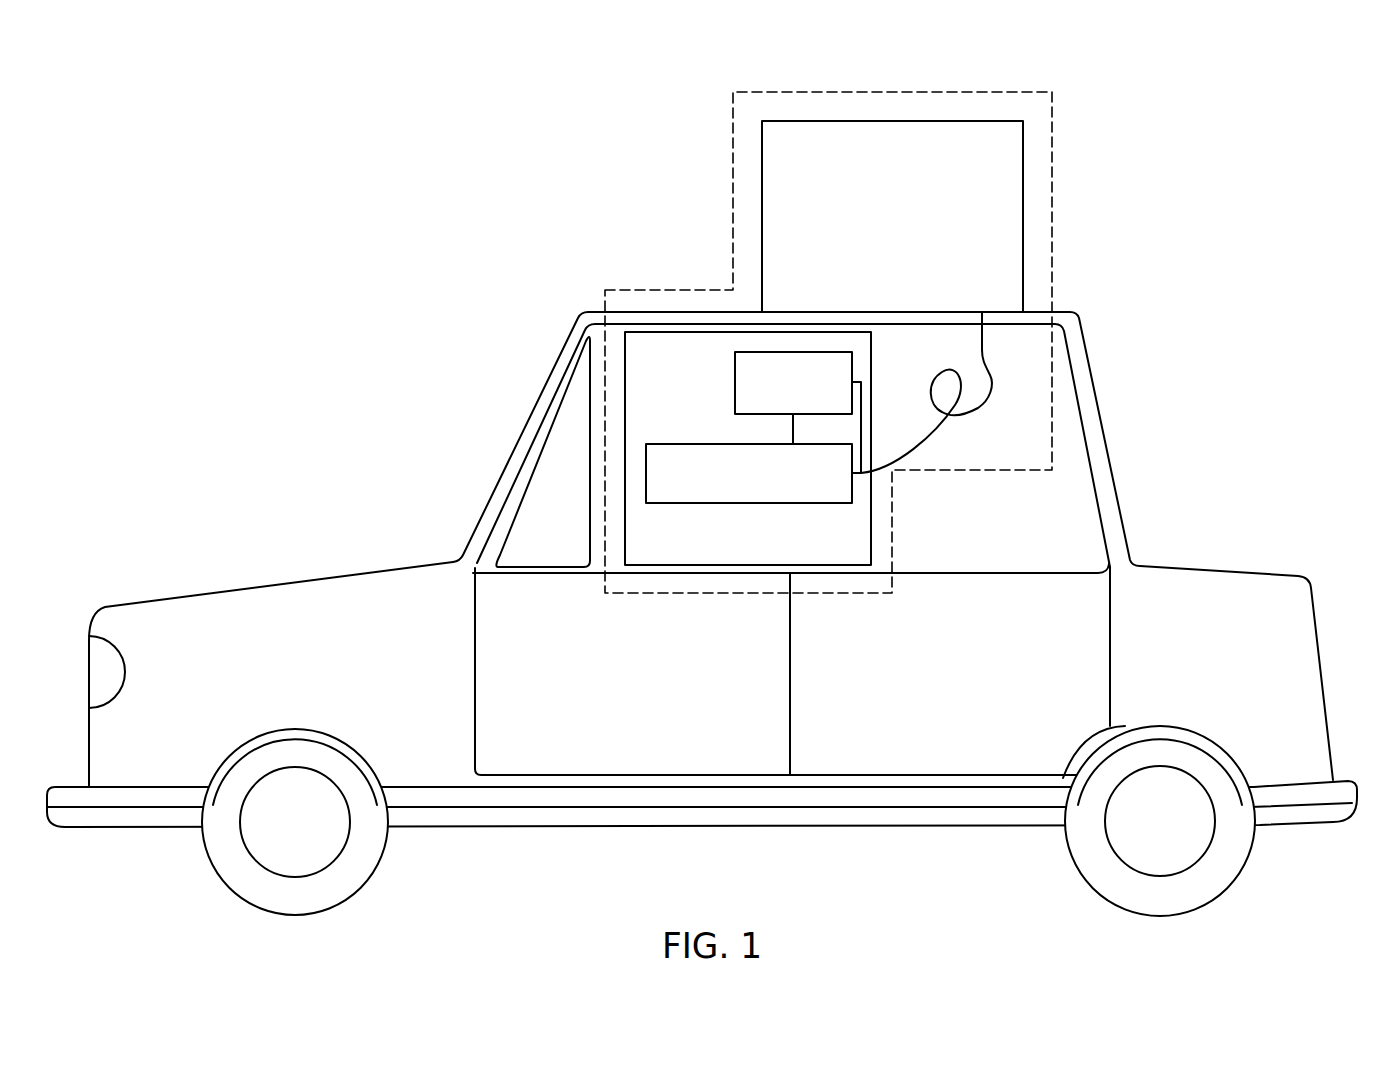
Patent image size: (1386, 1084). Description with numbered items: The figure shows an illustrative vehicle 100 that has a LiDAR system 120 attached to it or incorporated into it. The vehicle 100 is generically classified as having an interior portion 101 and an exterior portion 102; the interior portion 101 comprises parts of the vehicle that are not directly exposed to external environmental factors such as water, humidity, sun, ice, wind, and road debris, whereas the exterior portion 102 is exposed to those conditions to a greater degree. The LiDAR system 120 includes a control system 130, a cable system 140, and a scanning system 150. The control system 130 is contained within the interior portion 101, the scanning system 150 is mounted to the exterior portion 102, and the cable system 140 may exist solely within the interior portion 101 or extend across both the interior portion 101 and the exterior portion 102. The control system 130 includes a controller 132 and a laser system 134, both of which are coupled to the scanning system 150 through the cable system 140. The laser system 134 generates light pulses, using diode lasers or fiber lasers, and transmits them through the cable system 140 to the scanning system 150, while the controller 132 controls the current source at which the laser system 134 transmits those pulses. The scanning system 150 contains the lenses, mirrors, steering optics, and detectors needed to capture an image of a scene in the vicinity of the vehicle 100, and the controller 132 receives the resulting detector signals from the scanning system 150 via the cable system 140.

The vehicle 100 is at (702, 614).
The interior portion 101 is at (308, 637).
The exterior portion 102 is at (574, 299).
The LiDAR system 120 is at (1053, 202).
The control system 130 is at (872, 495).
The controller 132 is at (853, 366).
The laser system 134 is at (748, 504).
The cable system 140 is at (983, 405).
The scanning system 150 is at (890, 121).